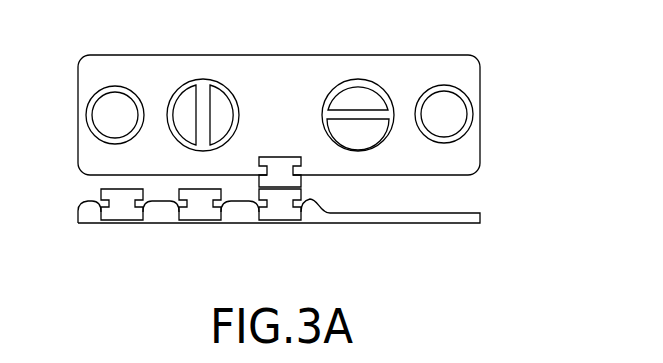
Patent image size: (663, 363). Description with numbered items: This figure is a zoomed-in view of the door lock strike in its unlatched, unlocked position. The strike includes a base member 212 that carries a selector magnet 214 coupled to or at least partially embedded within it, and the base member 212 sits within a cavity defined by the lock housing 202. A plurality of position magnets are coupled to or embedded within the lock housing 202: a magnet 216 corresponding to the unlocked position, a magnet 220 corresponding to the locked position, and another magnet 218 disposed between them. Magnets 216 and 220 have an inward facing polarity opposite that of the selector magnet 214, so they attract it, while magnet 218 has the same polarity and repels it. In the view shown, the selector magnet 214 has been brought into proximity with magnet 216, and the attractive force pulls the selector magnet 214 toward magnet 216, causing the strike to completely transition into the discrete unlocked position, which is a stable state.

The lock housing 202 is at (448, 217).
The base member 212 is at (470, 74).
The selector magnet 214 is at (281, 165).
The position magnet corresponding to the unlocked position 216 is at (280, 210).
The position magnet disposed between the unlocked and locked magnets 218 is at (200, 210).
The position magnet corresponding to the locked position 220 is at (122, 210).